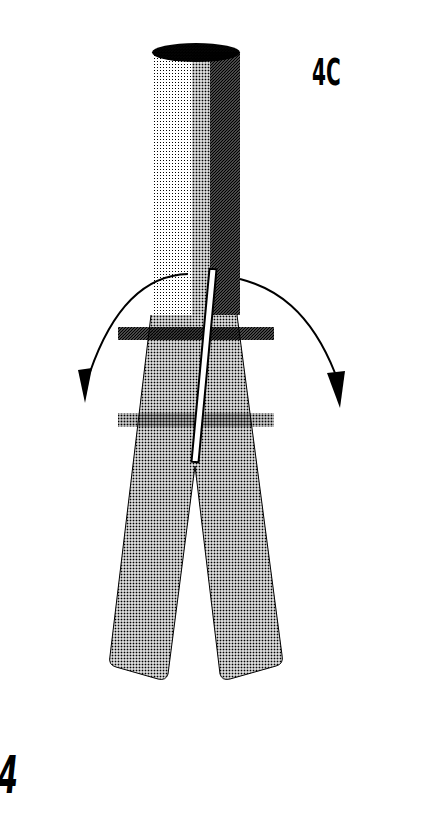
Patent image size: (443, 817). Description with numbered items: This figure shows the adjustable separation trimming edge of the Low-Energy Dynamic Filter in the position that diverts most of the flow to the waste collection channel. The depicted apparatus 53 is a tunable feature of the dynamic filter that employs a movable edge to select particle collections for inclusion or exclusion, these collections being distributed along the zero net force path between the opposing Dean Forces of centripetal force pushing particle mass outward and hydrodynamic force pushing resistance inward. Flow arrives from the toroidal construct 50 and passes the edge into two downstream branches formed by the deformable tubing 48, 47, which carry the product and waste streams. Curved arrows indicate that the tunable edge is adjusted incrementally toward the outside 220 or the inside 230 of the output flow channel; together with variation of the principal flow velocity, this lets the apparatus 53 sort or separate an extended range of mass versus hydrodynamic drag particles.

The toroidal construct 50 is at (153, 93).
The inside of the output flow channel 230 is at (112, 298).
The outside of the output flow channel 220 is at (302, 293).
The deformable tubing 48 is at (123, 473).
The deformable tubing 47 is at (272, 472).
The apparatus 53 is at (385, 603).